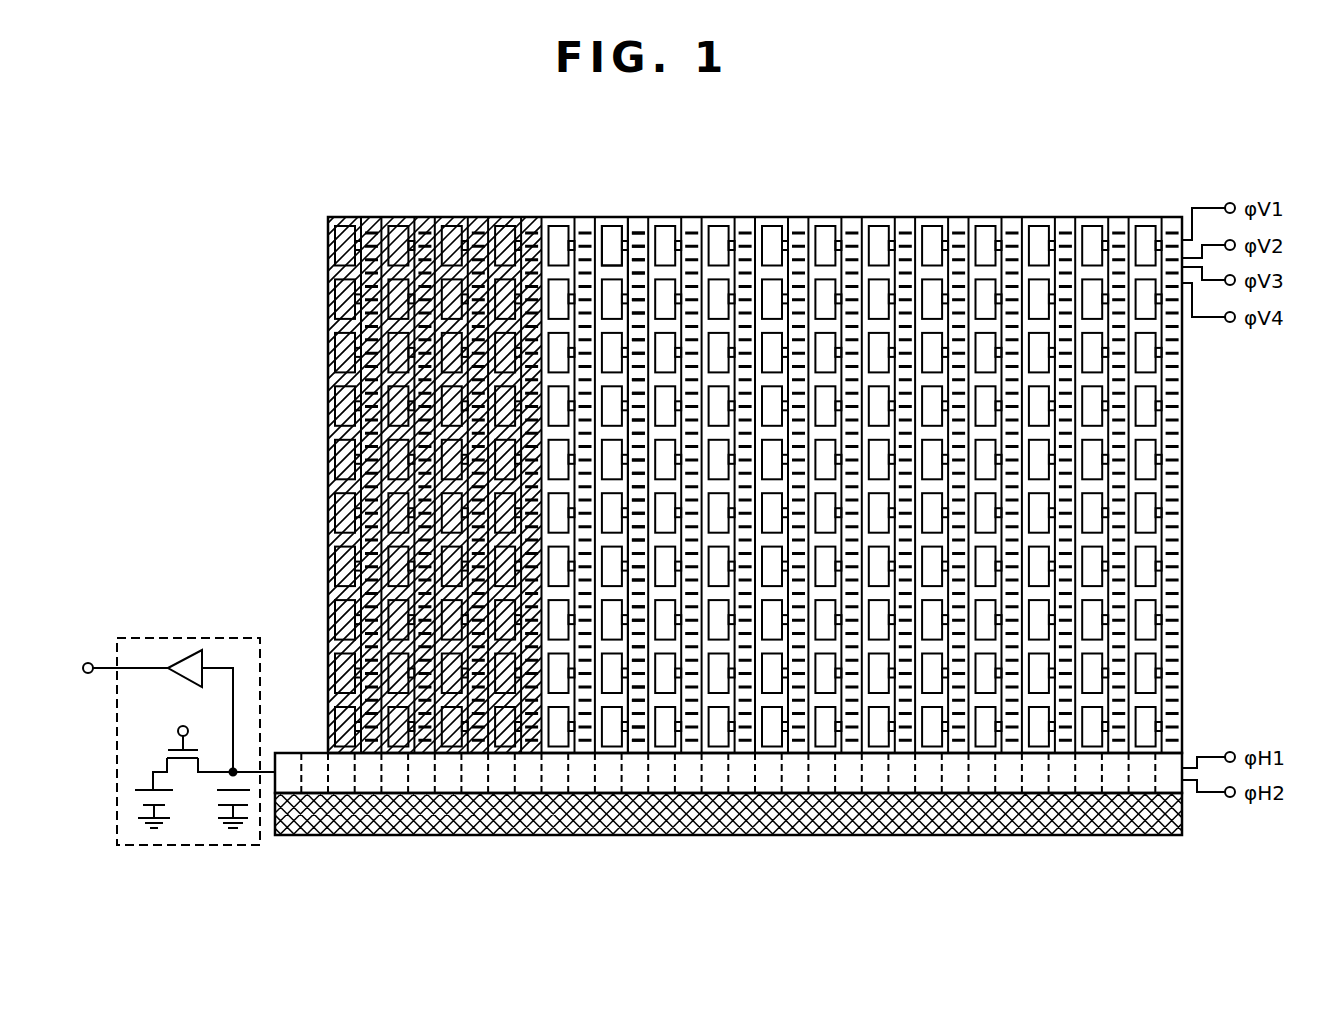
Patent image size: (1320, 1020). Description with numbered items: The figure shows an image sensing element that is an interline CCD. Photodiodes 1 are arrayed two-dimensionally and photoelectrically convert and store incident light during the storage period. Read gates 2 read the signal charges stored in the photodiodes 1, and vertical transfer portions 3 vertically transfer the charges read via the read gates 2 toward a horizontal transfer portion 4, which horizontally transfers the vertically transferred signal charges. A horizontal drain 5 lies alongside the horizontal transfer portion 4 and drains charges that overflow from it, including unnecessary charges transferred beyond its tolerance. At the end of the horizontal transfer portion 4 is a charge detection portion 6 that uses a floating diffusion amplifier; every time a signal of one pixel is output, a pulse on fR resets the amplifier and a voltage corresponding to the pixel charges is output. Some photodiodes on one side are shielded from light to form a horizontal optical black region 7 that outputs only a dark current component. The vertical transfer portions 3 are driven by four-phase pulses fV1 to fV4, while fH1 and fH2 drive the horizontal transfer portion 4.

The photodiodes 1 is at (609, 233).
The read gates 2 is at (628, 240).
The vertical transfer portions 3 is at (640, 232).
The horizontal transfer portion 4 is at (453, 783).
The horizontal drain 5 is at (653, 823).
The charge detection portion 6 is at (185, 845).
The horizontal optical black region 7 is at (371, 217).